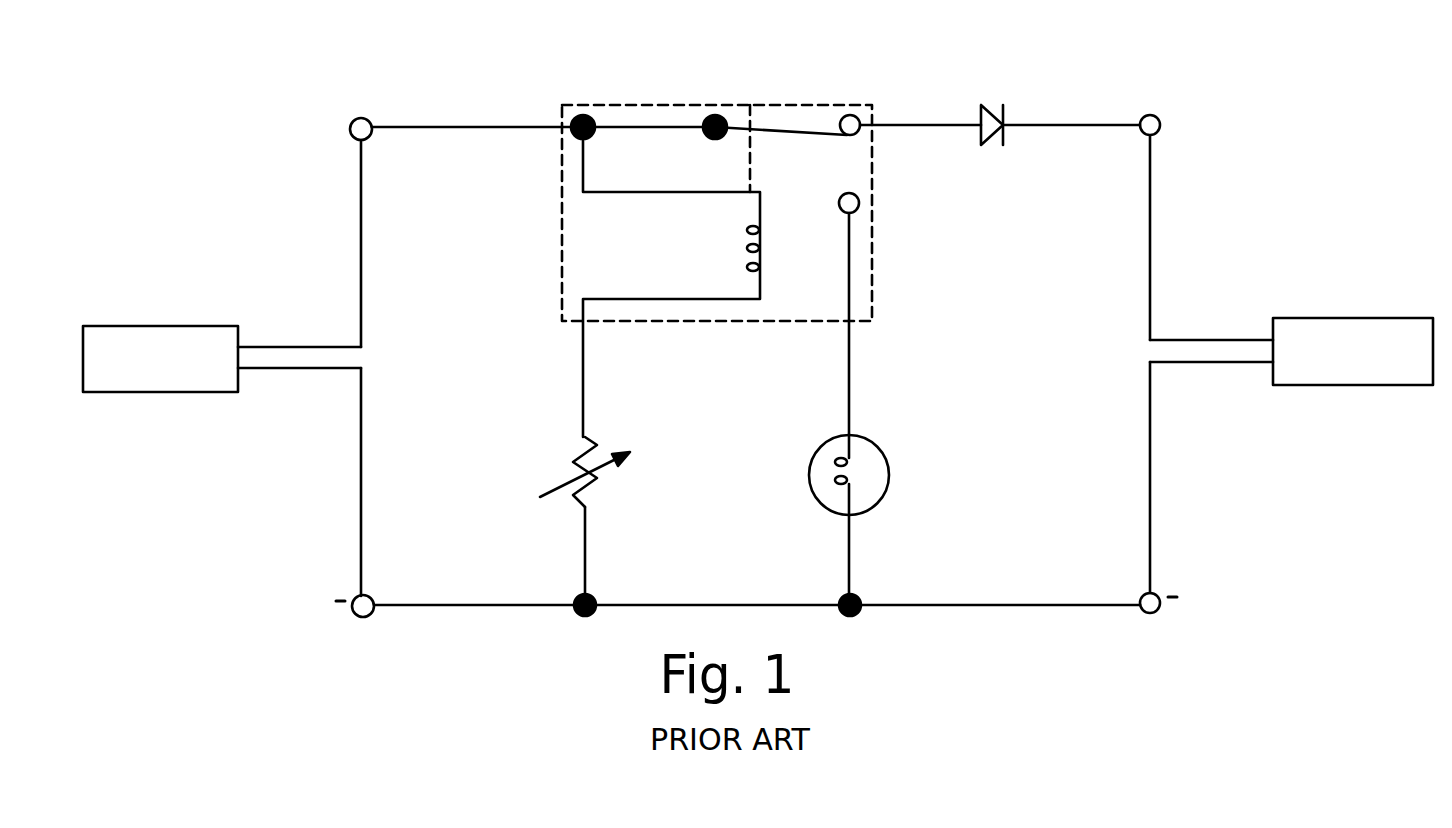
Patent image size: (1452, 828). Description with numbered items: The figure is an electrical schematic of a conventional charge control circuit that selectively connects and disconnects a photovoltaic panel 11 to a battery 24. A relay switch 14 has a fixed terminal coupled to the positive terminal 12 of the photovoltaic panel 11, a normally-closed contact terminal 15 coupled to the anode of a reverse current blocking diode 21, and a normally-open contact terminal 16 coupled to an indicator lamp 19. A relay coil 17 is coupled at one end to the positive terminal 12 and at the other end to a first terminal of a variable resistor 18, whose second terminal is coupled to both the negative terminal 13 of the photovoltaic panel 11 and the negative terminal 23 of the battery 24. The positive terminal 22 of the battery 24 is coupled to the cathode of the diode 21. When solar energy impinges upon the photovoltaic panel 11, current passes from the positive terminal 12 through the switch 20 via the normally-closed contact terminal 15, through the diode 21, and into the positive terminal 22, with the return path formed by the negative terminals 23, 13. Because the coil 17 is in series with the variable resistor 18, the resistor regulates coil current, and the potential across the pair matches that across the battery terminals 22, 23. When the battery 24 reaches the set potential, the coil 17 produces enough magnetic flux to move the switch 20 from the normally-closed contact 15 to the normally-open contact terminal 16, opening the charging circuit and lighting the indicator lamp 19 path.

The photovoltaic panel 11 is at (167, 326).
The positive terminal 12 is at (370, 117).
The negative terminal 13 is at (354, 616).
The relay switch 14 is at (578, 106).
The normally-closed contact terminal 15 is at (852, 115).
The normally-open contact terminal 16 is at (857, 209).
The relay coil 17 is at (748, 250).
The variable resistor 18 is at (573, 462).
The indicator lamp 19 is at (887, 485).
The switch 20 is at (772, 132).
The reverse current blocking diode 21 is at (997, 110).
The positive terminal 22 is at (1152, 113).
The negative terminal 23 is at (1158, 612).
The battery 24 is at (1343, 318).